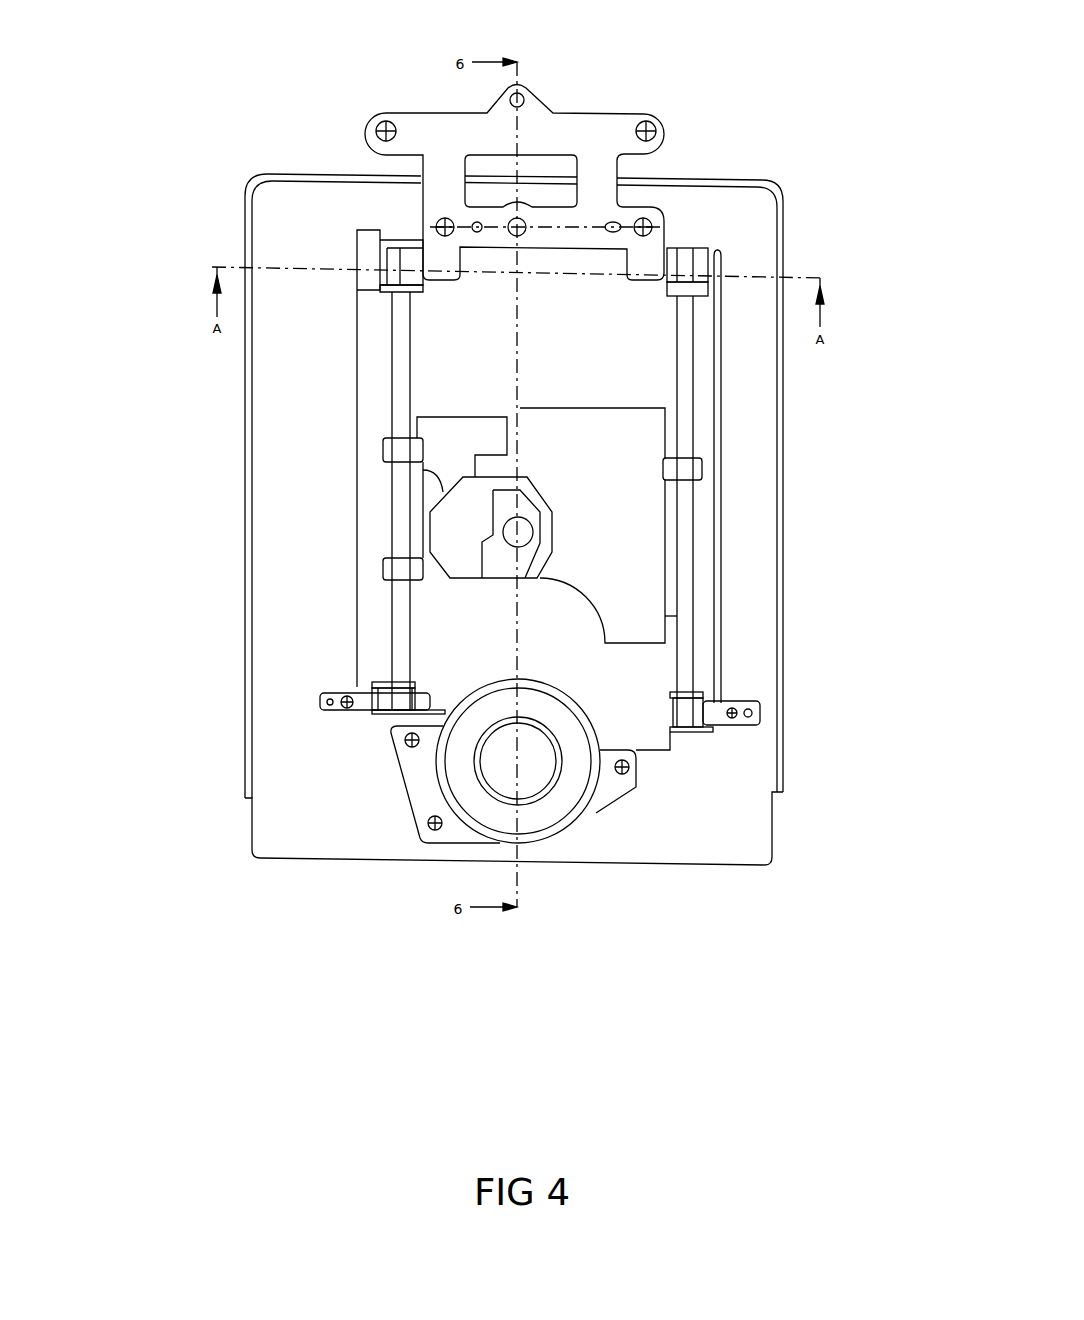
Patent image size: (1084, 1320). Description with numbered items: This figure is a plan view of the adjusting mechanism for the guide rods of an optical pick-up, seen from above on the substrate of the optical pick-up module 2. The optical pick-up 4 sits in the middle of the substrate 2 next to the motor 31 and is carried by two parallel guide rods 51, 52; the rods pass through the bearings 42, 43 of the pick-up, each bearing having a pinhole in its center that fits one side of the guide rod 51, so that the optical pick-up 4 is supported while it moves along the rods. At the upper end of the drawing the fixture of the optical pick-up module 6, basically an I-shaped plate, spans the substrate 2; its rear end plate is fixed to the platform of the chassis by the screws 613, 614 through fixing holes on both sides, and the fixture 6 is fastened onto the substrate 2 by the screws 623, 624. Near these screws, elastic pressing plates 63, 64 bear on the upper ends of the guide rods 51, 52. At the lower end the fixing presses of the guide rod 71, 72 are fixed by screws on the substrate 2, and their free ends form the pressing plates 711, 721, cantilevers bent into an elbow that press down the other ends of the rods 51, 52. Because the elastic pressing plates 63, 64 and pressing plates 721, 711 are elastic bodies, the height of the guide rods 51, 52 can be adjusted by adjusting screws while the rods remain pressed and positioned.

The substrate of the optical pick-up module 2 is at (752, 468).
The optical pick-up 4 is at (645, 525).
The fixture of the optical pick-up module 6 is at (567, 130).
The motor 31 is at (552, 805).
The bearing 42 is at (397, 450).
The bearing 43 is at (400, 572).
The guide rod 51 is at (405, 507).
The guide rod 52 is at (688, 565).
The elastic pressing plate 63 is at (397, 277).
The elastic pressing plate 64 is at (683, 268).
The fixing press of the guide rod of the optical pick-up 71 is at (748, 712).
The fixing press of the guide rod of the optical pick-up 72 is at (333, 707).
The screw 613 is at (384, 134).
The screw 614 is at (656, 118).
The screw 623 is at (443, 225).
The screw 624 is at (645, 227).
The pressing plate 711 is at (697, 720).
The pressing plate 721 is at (392, 700).